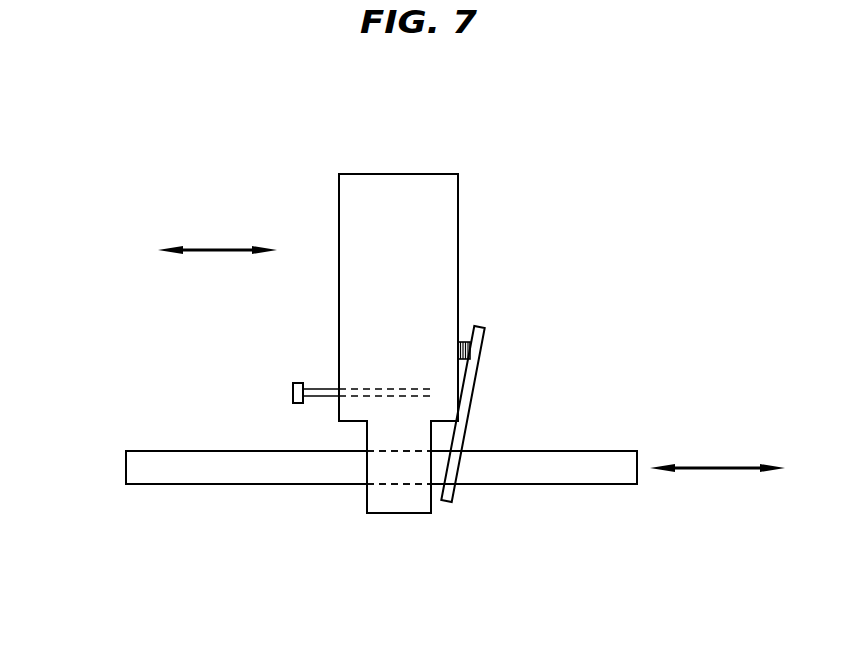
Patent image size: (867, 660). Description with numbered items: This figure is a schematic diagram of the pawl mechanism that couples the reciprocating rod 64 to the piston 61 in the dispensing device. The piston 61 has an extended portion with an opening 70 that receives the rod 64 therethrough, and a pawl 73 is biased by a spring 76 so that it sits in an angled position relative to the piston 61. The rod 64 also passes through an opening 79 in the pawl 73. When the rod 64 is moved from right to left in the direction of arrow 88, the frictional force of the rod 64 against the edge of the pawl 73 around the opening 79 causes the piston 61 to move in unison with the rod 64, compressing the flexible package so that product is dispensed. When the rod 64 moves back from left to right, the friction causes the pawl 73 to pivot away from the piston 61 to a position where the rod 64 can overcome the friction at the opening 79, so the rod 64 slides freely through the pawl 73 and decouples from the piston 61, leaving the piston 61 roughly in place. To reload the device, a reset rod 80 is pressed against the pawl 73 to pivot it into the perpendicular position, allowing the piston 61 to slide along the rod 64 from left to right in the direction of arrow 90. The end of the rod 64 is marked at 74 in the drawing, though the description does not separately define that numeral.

The piston 61 is at (400, 190).
The reciprocating rod 64 is at (205, 477).
The opening 70 is at (384, 484).
The pawl 73 is at (467, 408).
The bar end 74 is at (126, 472).
The spring 76 is at (472, 302).
The opening 79 is at (456, 484).
The reset rod 80 is at (314, 386).
The arrow 88 is at (714, 467).
The arrow 90 is at (218, 250).